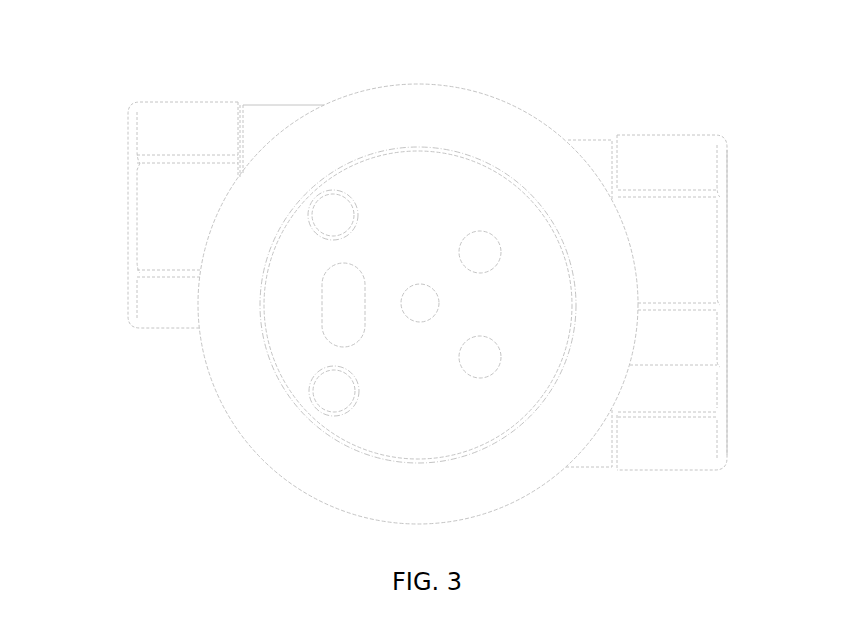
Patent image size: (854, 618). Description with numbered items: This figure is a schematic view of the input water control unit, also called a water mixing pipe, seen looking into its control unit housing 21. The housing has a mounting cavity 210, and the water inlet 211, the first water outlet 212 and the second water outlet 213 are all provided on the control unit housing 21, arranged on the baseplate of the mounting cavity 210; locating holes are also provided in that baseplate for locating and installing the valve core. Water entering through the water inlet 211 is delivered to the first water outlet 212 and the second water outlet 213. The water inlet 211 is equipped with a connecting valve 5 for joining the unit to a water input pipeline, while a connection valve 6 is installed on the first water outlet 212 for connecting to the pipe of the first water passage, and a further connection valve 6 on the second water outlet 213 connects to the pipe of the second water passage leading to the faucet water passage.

The control unit housing 21 is at (500, 140).
The mounting cavity 210 is at (383, 440).
The water inlet 211 is at (483, 250).
The first water outlet 212 is at (338, 306).
The second water outlet 213 is at (410, 298).
The connecting valve 5 is at (700, 230).
The connection valve 6 is at (145, 207).